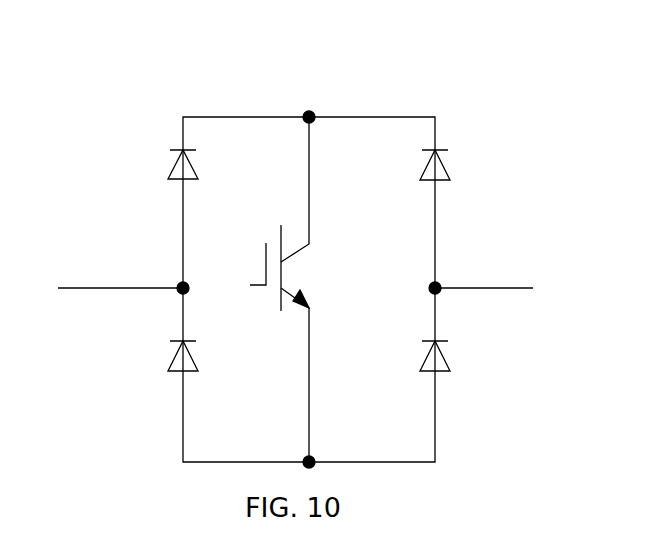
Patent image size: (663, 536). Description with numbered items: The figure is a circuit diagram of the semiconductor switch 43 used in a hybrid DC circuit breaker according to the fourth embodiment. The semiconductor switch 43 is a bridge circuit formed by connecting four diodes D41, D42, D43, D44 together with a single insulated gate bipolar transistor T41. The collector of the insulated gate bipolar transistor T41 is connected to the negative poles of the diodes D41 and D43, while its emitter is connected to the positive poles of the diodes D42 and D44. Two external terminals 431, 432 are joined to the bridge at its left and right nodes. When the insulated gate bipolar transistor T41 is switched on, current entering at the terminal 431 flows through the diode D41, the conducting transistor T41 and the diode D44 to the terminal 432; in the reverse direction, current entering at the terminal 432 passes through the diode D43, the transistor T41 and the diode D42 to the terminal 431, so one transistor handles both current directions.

The semiconductor switch 43 is at (325, 92).
The terminal 431 is at (121, 288).
The terminal 432 is at (484, 288).
The diode D41 is at (204, 164).
The diode D42 is at (204, 358).
The diode D43 is at (455, 165).
The diode D44 is at (455, 358).
The insulated gate bipolar transistor T41 is at (302, 289).